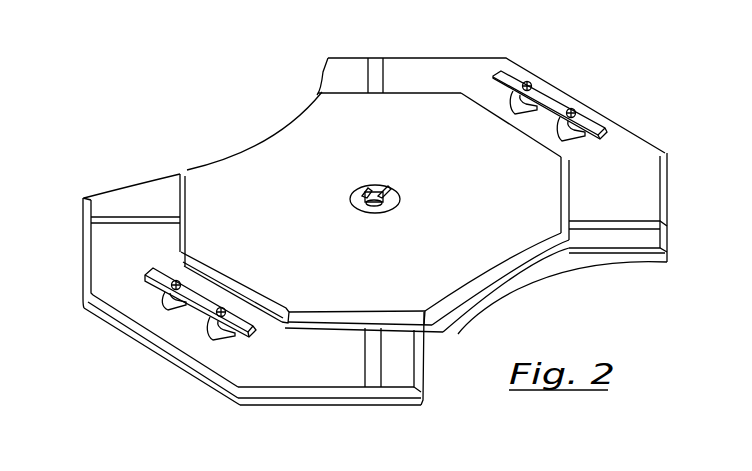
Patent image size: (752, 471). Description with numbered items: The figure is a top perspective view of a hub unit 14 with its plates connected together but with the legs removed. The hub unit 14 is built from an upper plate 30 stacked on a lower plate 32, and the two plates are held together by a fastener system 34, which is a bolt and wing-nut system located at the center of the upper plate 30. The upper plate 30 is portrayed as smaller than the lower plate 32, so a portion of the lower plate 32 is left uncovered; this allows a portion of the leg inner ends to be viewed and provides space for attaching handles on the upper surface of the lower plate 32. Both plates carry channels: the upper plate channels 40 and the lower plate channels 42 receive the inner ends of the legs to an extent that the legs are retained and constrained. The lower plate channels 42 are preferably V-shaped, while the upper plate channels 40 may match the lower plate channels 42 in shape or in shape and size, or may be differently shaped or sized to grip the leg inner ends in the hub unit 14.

The hub unit 14 is at (212, 133).
The upper plate 30 is at (313, 152).
The lower plate 32 is at (256, 365).
The fastener system 34 is at (396, 194).
The upper plate channels 40 is at (170, 218).
The lower plate channels 42 is at (117, 220).